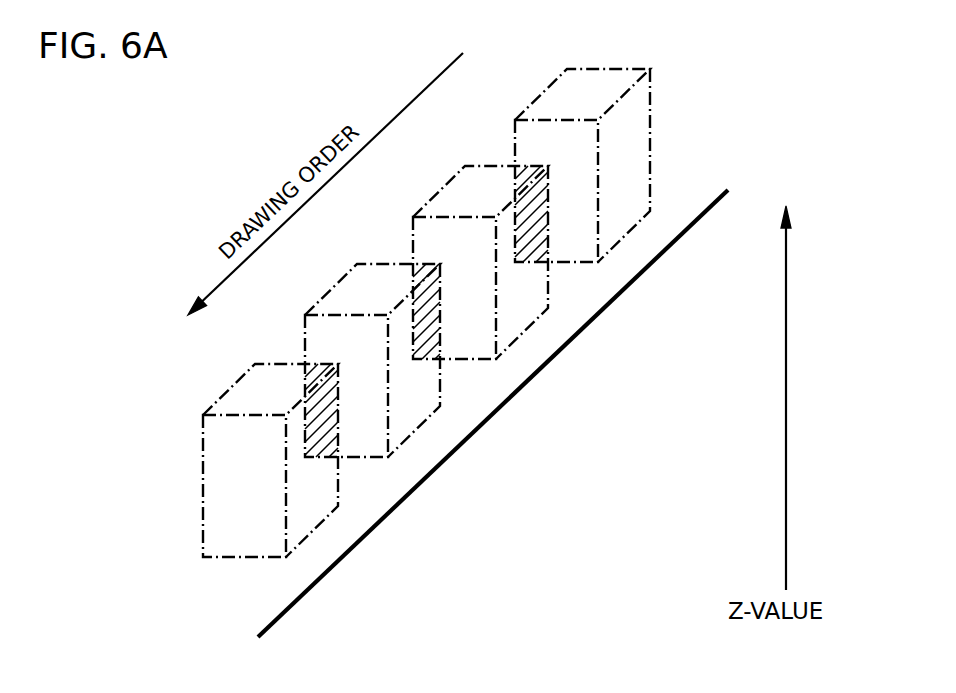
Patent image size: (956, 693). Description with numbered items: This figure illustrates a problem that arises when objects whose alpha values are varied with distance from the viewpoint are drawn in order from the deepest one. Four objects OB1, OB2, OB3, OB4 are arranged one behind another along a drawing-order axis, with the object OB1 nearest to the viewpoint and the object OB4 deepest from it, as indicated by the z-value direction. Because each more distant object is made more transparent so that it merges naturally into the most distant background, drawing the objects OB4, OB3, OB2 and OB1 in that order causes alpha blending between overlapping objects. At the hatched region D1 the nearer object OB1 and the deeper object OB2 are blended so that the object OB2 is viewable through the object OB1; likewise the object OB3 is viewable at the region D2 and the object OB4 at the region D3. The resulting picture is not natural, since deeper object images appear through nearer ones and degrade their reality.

The object OB1 is at (208, 408).
The object OB2 is at (325, 300).
The object OB3 is at (423, 207).
The object OB4 is at (513, 116).
The overlap region D1 is at (325, 434).
The overlap region D2 is at (434, 350).
The overlap region D3 is at (531, 243).